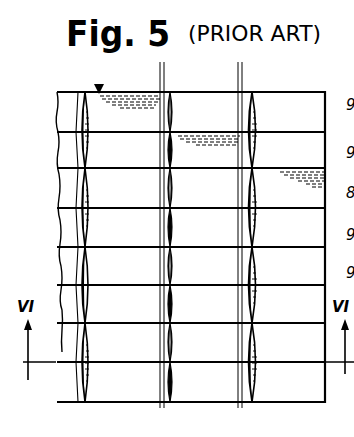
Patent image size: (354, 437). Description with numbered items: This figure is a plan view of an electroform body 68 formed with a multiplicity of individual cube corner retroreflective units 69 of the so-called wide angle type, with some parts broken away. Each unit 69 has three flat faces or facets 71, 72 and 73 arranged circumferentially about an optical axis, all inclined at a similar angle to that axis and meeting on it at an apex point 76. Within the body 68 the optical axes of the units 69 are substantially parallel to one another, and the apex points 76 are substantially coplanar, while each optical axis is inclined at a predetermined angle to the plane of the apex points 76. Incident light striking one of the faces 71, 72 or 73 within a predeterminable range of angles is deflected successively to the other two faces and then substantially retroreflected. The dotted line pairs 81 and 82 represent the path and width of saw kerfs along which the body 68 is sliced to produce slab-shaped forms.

The electroform body 68 is at (290, 93).
The cube corner retroreflective unit 69 is at (98, 87).
The face 71 is at (123, 125).
The face 72 is at (133, 160).
The face 73 is at (77, 121).
The apex point 76 is at (89, 247).
The dotted line pair 81 is at (165, 80).
The dotted line pair 82 is at (244, 82).